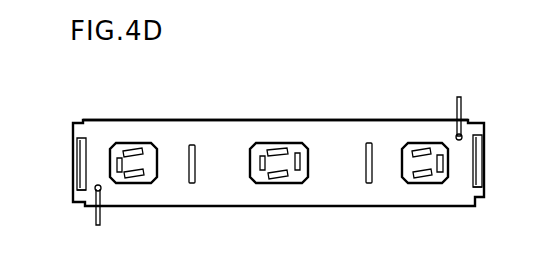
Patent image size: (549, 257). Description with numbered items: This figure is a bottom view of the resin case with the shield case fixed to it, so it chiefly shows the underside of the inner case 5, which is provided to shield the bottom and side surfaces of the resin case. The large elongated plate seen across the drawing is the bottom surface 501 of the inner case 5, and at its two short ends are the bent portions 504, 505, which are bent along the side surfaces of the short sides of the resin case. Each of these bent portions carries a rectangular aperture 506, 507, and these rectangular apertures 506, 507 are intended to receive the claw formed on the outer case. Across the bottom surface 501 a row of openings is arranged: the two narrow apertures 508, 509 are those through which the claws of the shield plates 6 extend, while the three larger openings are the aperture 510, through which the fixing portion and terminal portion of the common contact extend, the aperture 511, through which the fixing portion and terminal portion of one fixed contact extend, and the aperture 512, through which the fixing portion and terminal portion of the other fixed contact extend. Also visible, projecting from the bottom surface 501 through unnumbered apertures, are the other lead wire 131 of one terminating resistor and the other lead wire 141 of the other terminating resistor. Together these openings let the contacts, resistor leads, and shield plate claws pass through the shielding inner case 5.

The inner case 5 is at (343, 119).
The shield plates 6 is at (191, 185).
The other lead wire of the terminating resistor 131 is at (101, 222).
The other lead wire of the terminating resistor 141 is at (462, 103).
The bottom surface 501 is at (233, 133).
The bent portion 504 is at (73, 160).
The bent portion 505 is at (485, 153).
The aperture 506 is at (83, 181).
The aperture 507 is at (485, 183).
The aperture 508 is at (190, 145).
The aperture 509 is at (370, 143).
The aperture 510 is at (283, 184).
The aperture 511 is at (136, 143).
The aperture 512 is at (422, 184).